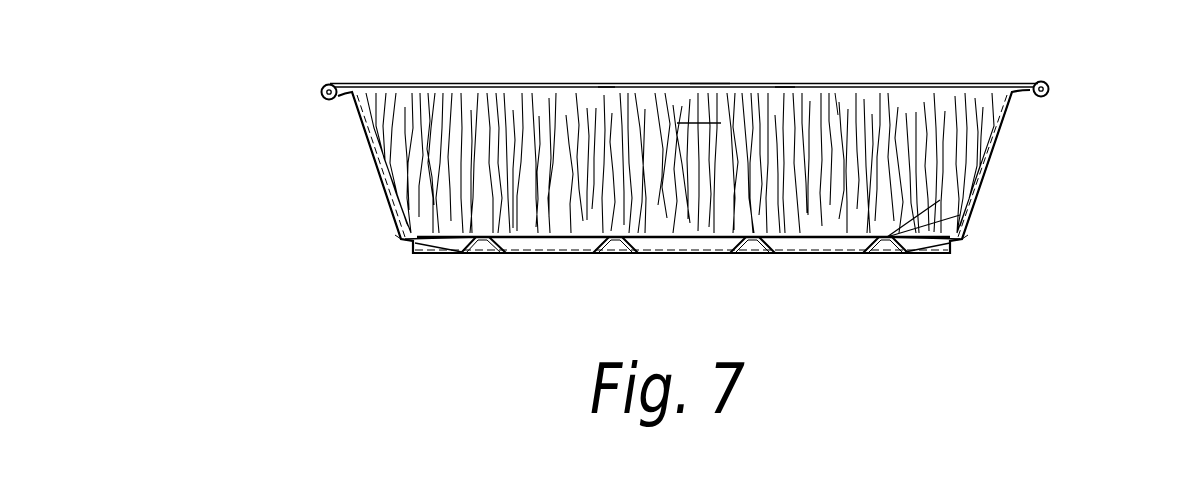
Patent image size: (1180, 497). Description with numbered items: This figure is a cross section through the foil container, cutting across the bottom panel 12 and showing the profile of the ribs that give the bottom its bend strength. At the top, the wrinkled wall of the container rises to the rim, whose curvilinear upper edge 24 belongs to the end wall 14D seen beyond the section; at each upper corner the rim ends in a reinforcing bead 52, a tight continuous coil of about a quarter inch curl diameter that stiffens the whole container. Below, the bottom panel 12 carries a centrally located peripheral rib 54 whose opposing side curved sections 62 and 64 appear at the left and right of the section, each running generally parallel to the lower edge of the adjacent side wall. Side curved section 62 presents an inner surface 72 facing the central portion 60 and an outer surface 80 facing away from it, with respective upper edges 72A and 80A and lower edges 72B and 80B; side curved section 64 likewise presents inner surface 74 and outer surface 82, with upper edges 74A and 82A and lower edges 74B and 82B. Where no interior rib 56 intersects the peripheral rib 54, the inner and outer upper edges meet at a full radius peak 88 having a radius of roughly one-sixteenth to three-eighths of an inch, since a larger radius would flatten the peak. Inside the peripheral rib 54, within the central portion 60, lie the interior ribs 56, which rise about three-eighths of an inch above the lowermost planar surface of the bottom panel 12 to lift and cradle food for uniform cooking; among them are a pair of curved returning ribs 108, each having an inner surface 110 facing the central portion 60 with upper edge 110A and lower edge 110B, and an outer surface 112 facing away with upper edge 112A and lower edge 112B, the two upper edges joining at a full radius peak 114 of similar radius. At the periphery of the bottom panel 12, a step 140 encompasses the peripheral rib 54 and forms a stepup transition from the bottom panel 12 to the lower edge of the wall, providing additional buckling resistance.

The bottom panel 12 is at (547, 255).
The end wall 14D is at (699, 112).
The curvilinear upper edge 24 is at (707, 87).
The reinforcing bead 52 is at (1043, 82).
The peripheral rib 54 is at (467, 257).
The interior ribs 56 is at (778, 195).
The central portion 60 is at (693, 258).
The side curved section 62 is at (426, 255).
The side curved section 64 is at (935, 256).
The inner surface 72 is at (617, 235).
The upper edge 72A is at (493, 255).
The lower edge 72B is at (503, 255).
The inner surface 74 is at (873, 258).
The upper edge 74A is at (888, 258).
The lower edge 74B is at (853, 258).
The outer surface 80 is at (477, 255).
The upper edge 80A is at (405, 244).
The lower edge 80B is at (438, 255).
The outer surface 82 is at (910, 258).
The upper edge 82A is at (964, 238).
The lower edge 82B is at (906, 257).
The full radius peak 88 is at (478, 235).
The returning rib 108 is at (622, 257).
The inner surface 110 is at (630, 257).
The upper edge 110A is at (618, 257).
The lower edge 110B is at (692, 258).
The outer surface 112 is at (545, 256).
The upper edge 112A is at (843, 115).
The lower edge 112B is at (578, 235).
The full radius peak 114 is at (606, 100).
The step 140 is at (957, 249).